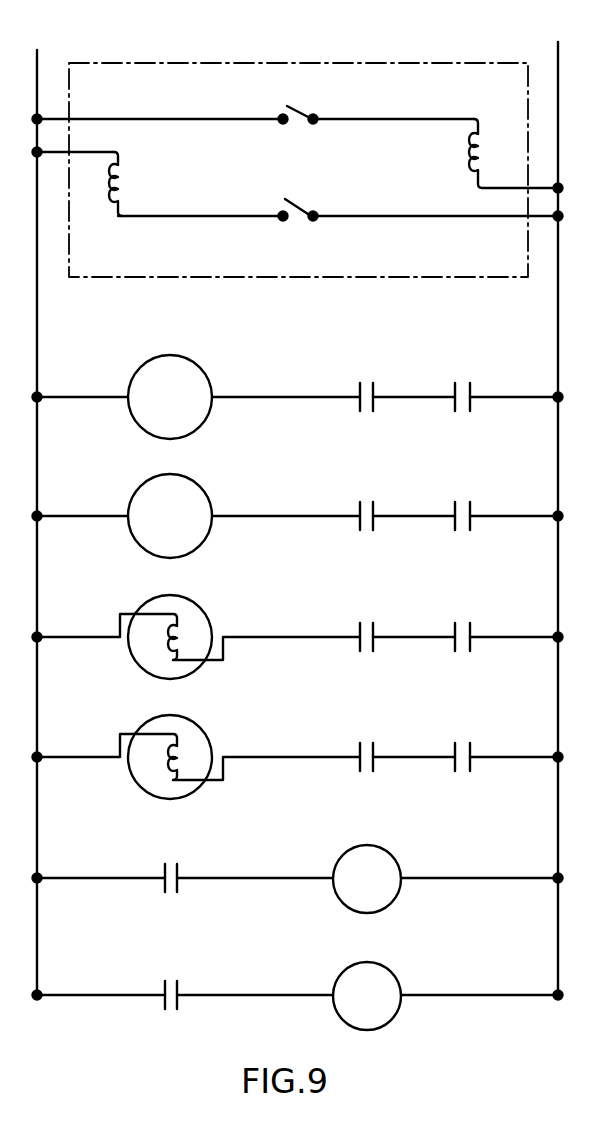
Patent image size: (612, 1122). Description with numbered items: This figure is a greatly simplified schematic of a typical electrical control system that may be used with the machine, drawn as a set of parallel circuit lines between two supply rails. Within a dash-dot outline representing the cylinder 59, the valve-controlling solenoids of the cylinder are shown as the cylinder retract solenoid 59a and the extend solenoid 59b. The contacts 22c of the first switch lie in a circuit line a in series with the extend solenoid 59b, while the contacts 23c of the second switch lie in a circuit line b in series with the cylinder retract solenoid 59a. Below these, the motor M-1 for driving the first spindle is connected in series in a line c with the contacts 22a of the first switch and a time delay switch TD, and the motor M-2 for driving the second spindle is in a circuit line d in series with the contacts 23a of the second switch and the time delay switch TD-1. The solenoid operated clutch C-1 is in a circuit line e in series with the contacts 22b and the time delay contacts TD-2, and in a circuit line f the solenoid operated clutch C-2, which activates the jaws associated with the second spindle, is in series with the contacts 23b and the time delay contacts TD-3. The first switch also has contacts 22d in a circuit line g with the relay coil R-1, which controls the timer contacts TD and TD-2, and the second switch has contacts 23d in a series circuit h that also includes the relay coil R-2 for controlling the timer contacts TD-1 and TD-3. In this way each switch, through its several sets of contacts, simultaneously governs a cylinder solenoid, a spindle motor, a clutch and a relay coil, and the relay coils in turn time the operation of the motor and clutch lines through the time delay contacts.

The cylinder 59 is at (464, 63).
The cylinder retract solenoid 59a is at (126, 166).
The extend solenoid 59b is at (470, 156).
The contacts of switch 22 22c is at (300, 112).
The contacts of switch 23 23c is at (300, 208).
The contacts of switch 22 22a is at (367, 381).
The contacts of switch 23 23a is at (366, 500).
The contacts of switch 22 22b is at (366, 621).
The contacts of switch 23 23b is at (366, 741).
The contacts of switch 22 22d is at (178, 862).
The contacts of switch 23 23d is at (175, 978).
The circuit line a is at (83, 117).
The circuit line b is at (85, 155).
The circuit line c is at (70, 395).
The circuit line d is at (62, 513).
The circuit line e is at (66, 634).
The circuit line f is at (66, 754).
The circuit line g is at (56, 875).
The series circuit h is at (60, 992).
The motor M-1 is at (170, 397).
The motor M-2 is at (170, 516).
The solenoid operated clutch C-1 is at (204, 615).
The solenoid operated clutch C-2 is at (204, 734).
The time delay switch TD is at (462, 381).
The time delay switch TD-1 is at (462, 500).
The time delay contacts TD-2 is at (462, 621).
The time delay contacts TD-3 is at (462, 741).
The relay coil R-1 is at (367, 879).
The relay coil R-2 is at (367, 996).